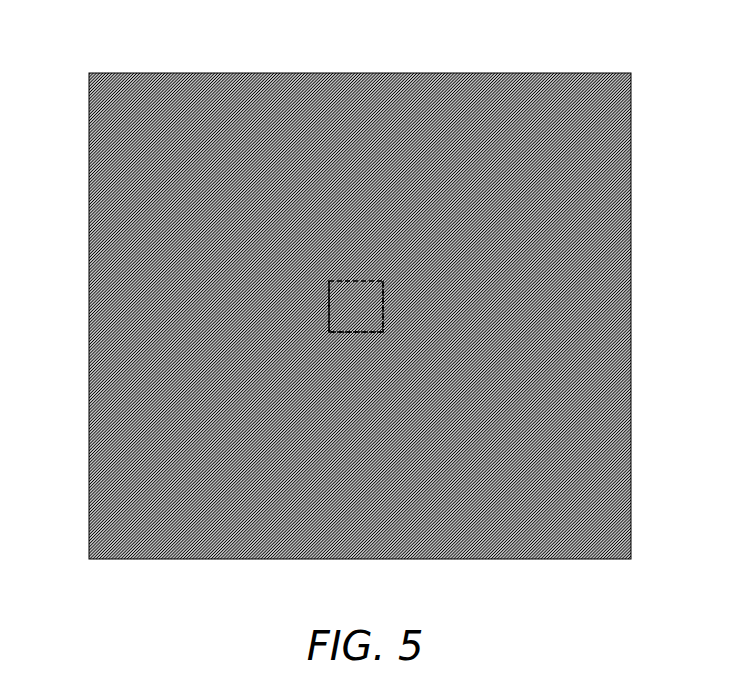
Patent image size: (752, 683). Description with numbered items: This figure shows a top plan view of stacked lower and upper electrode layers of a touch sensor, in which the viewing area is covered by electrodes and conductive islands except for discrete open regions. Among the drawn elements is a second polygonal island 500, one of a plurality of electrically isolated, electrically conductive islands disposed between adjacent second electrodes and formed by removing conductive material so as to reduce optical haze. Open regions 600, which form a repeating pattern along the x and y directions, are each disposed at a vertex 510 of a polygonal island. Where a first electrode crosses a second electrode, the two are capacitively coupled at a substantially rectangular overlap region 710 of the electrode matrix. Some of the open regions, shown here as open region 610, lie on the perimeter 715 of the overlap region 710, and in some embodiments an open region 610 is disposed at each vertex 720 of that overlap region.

The second polygonal island 500 is at (140, 108).
The vertex of second polygonal island 510 is at (200, 165).
The open region 600 is at (187, 178).
The open region 610 is at (320, 272).
The overlap region 710 is at (328, 318).
The perimeter of overlap region 715 is at (358, 335).
The vertex of overlap region 720 is at (382, 335).